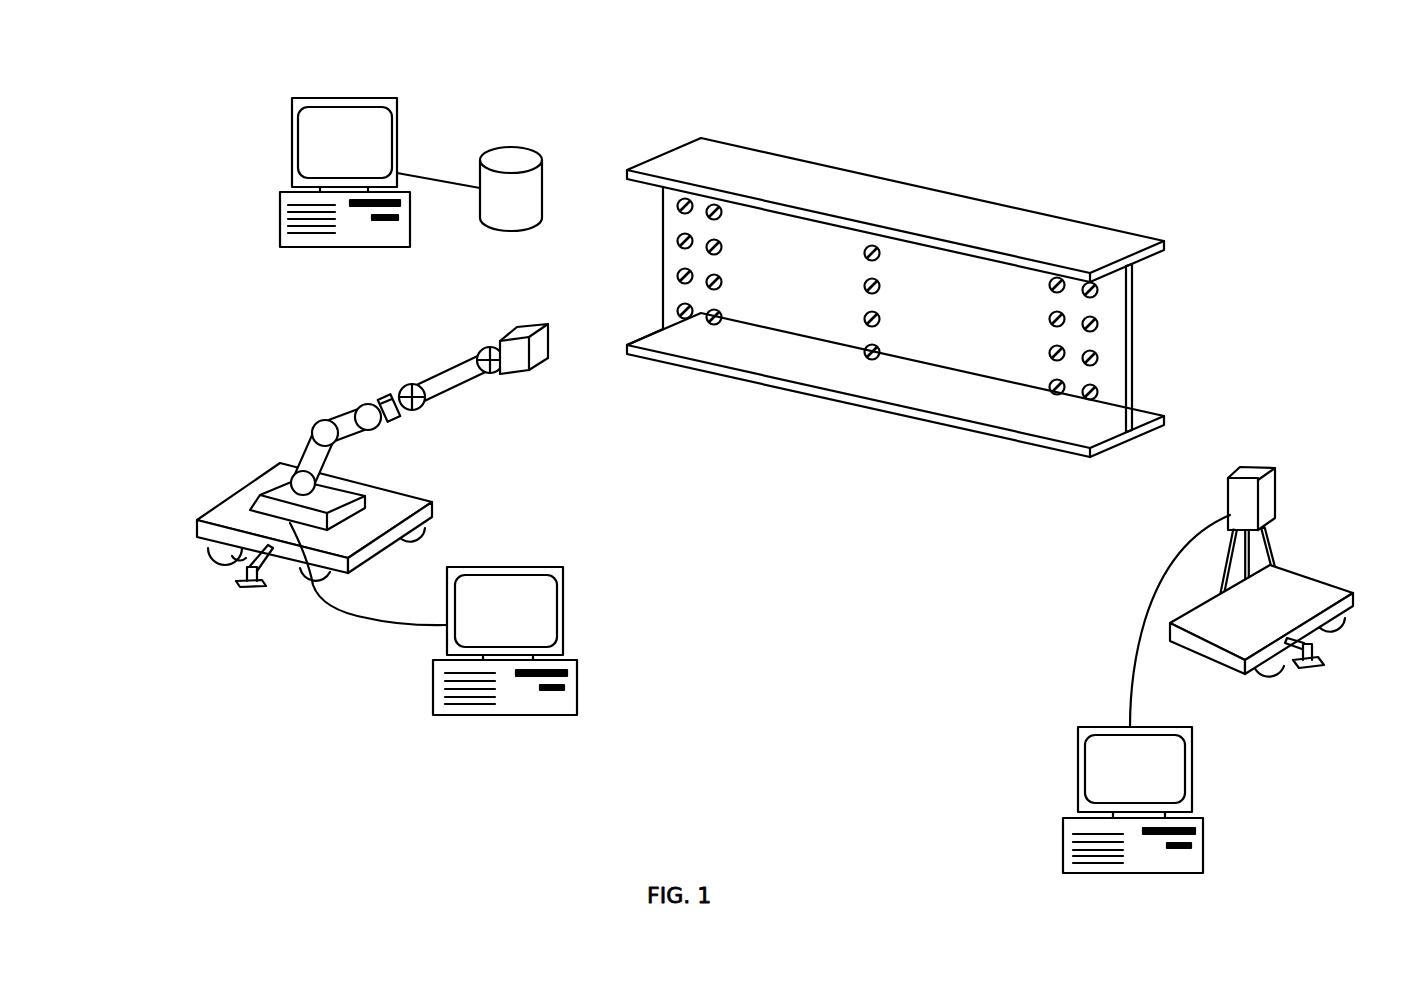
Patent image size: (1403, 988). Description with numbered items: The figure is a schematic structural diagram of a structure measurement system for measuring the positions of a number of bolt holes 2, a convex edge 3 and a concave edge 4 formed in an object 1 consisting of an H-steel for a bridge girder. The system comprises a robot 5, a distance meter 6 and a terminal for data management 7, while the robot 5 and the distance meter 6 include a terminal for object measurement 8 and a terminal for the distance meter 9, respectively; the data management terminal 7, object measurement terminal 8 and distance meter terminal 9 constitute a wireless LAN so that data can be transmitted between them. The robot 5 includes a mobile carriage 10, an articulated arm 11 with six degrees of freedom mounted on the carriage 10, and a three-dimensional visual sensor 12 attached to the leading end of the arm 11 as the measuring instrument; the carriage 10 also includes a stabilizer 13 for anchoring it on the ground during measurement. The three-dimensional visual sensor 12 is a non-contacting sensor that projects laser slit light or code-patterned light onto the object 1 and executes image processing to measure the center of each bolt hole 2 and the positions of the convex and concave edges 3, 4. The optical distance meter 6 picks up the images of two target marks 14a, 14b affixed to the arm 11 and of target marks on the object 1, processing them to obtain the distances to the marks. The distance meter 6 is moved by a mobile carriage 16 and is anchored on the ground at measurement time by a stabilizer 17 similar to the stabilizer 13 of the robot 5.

The object 1 is at (875, 308).
The bolt holes 2 is at (688, 318).
The convex edge 3 is at (634, 341).
The concave edge 4 is at (663, 327).
The robot 5 is at (428, 379).
The distance meter 6 is at (1310, 558).
The terminal for data management 7 is at (393, 141).
The terminal for object measurement 8 is at (563, 628).
The terminal for the distance meter 9 is at (1188, 768).
The mobile carriage 10 is at (293, 554).
The articulated arm 11 is at (450, 360).
The three-dimensional visual sensor 12 is at (522, 327).
The stabilizer 13 is at (262, 590).
The target mark 14a is at (497, 375).
The target mark 14b is at (426, 404).
The mobile carriage 16 is at (1286, 626).
The stabilizer 17 is at (1317, 668).